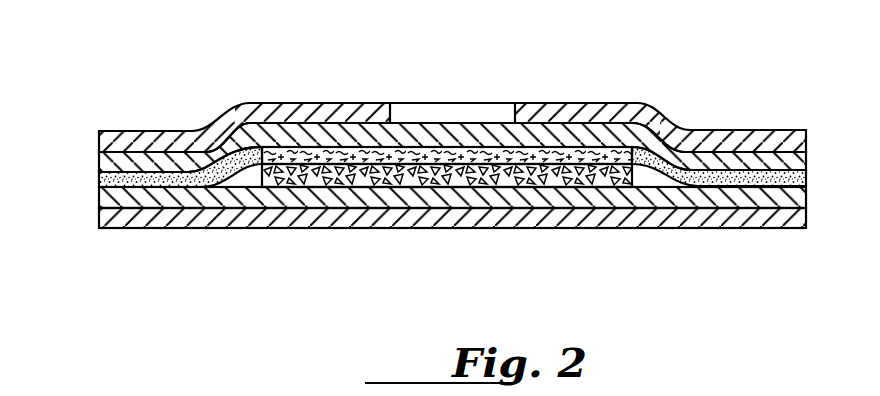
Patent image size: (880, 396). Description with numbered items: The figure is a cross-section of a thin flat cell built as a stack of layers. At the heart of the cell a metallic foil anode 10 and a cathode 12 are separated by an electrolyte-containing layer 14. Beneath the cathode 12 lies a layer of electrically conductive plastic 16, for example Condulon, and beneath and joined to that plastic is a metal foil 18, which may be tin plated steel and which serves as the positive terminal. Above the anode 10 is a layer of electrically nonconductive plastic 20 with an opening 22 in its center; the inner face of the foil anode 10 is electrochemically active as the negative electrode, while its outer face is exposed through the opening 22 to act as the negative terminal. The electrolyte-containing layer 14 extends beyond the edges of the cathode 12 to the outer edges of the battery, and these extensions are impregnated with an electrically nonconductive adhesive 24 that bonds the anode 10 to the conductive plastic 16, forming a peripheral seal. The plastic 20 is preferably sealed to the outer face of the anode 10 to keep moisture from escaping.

The metallic foil anode 10 is at (786, 162).
The cathode 12 is at (538, 180).
The electrolyte-containing layer 14 is at (607, 157).
The electrically conductive plastic 16 is at (762, 198).
The metal foil 18 is at (763, 218).
The electrically nonconductive plastic 20 is at (748, 140).
The opening 22 is at (438, 115).
The electrically nonconductive adhesive 24 is at (98, 180).